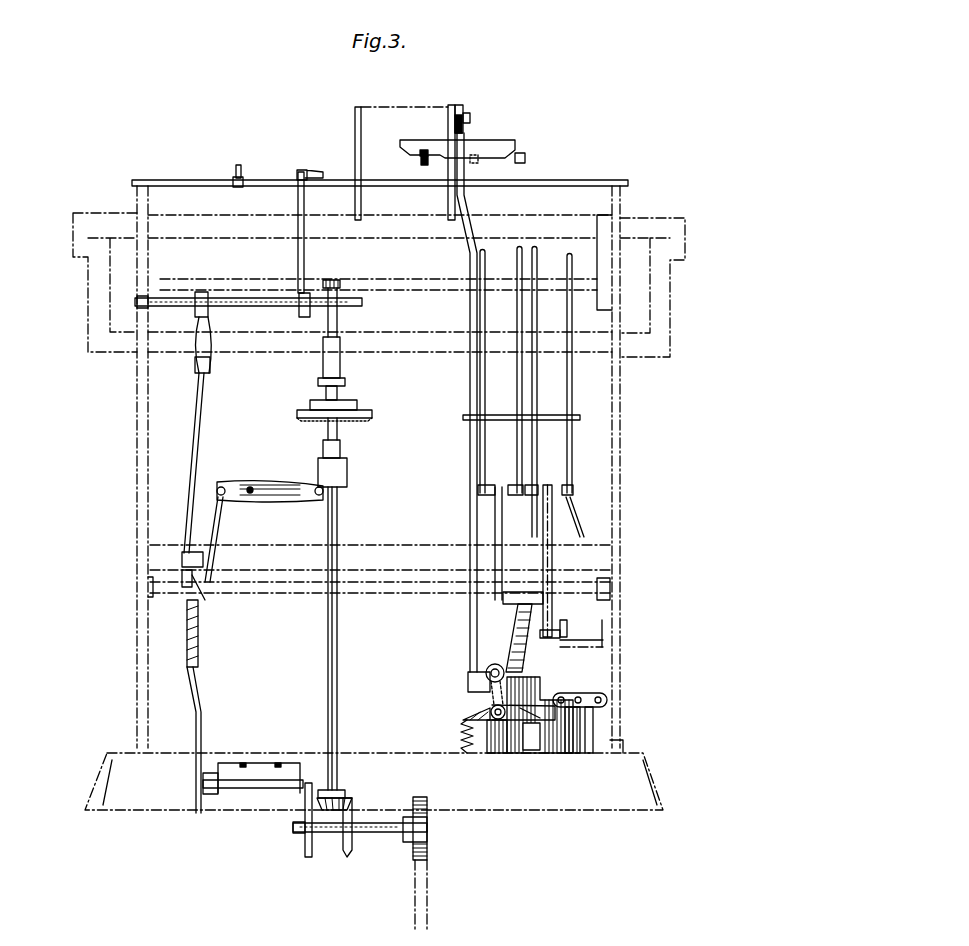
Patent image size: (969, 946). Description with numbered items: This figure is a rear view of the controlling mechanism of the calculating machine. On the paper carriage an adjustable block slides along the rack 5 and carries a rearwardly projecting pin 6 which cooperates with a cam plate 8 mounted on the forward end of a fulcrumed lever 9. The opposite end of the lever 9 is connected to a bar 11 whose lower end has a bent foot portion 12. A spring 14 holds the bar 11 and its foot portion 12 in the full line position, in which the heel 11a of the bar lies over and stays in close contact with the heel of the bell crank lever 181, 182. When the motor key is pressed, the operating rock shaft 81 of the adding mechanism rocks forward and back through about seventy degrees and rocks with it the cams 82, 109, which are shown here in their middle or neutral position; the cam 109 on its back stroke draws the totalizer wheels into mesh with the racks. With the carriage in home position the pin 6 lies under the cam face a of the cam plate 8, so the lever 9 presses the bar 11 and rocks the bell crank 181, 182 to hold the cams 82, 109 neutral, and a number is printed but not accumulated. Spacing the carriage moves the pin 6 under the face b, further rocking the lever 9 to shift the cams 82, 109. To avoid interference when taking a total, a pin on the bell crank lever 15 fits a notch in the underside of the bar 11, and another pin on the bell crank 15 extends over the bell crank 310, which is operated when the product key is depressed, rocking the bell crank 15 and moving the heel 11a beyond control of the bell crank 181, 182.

The rack 5 is at (557, 181).
The pin 6 is at (420, 160).
The cam plate 8 is at (491, 147).
The lever 9 is at (458, 107).
The bar 11 is at (467, 203).
The heel of the bar 11a is at (468, 706).
The bent foot portion 12 is at (477, 681).
The spring 14 is at (462, 730).
The bell crank lever 15 is at (490, 731).
The operating rock shaft 81 is at (376, 592).
The cam 82 is at (497, 518).
The cam 109 is at (552, 554).
The bell crank lever arm 181 is at (513, 636).
The bell crank lever arm 182 is at (565, 698).
The bell crank 310 is at (547, 744).
The cam face a is at (423, 152).
The cam face b is at (480, 160).